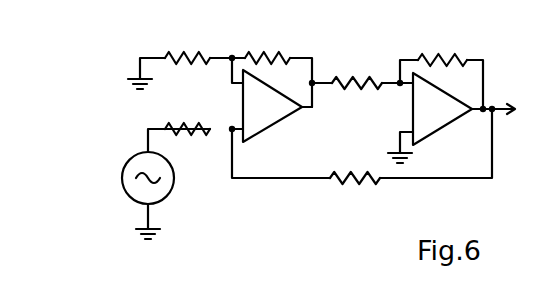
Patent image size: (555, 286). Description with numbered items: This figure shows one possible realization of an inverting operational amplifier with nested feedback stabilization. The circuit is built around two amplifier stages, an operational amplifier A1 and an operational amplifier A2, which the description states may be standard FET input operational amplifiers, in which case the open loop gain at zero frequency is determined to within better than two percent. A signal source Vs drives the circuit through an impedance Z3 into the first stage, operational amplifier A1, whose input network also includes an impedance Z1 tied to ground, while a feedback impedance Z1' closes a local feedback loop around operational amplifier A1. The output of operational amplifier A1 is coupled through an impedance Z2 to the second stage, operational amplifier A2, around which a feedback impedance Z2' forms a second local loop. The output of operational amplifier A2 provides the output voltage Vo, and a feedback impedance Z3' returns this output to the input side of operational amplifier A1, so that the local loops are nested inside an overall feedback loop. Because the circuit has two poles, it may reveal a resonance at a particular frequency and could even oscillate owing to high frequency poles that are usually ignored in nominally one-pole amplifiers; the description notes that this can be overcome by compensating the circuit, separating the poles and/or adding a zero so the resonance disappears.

The impedance Z1 is at (180, 41).
The feedback impedance Z1' is at (263, 39).
The impedance Z2 is at (354, 65).
The feedback impedance Z2' is at (439, 42).
The impedance Z3 is at (184, 112).
The feedback impedance Z3' is at (353, 159).
The operational amplifier A1 is at (272, 106).
The operational amplifier A2 is at (442, 109).
The signal source Vs is at (146, 162).
The output voltage Vo is at (507, 96).